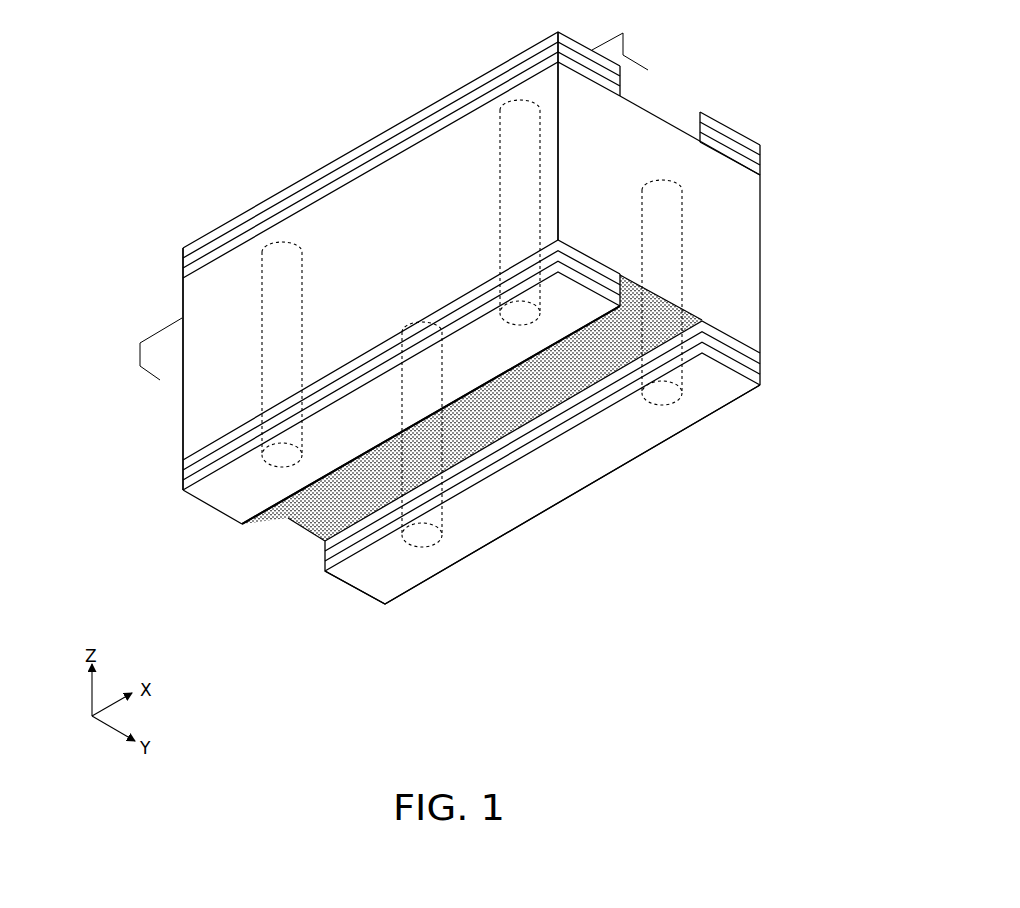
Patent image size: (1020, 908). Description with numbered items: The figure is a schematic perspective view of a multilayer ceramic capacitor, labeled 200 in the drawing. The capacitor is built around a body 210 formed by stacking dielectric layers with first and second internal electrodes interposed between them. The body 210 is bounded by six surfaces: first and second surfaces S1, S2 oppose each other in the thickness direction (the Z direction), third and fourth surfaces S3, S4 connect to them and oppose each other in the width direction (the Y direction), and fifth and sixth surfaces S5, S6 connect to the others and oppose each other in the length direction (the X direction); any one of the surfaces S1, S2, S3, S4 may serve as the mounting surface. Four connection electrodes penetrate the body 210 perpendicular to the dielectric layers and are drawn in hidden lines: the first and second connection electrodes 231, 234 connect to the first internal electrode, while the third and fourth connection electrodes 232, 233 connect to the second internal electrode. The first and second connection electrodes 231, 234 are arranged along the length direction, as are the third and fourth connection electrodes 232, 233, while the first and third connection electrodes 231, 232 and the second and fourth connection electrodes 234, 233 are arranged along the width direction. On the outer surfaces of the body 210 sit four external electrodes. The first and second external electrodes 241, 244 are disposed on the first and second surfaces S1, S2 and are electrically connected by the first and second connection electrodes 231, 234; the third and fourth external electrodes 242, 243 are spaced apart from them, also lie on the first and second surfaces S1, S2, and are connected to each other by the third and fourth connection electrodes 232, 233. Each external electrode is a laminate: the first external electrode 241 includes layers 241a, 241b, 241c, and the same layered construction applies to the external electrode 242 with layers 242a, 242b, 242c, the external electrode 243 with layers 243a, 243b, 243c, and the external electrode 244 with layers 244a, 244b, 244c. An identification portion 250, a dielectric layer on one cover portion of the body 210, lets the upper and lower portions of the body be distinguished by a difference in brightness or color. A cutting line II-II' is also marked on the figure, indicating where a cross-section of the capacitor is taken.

The housing 200 is at (273, 77).
The body 210 is at (312, 544).
The first connection electrode 231 is at (245, 514).
The third connection electrode 232 is at (424, 541).
The fourth connection electrode 233 is at (666, 403).
The second connection electrode 234 is at (568, 408).
The first external electrode 241 is at (328, 394).
The first layer of first external electrode 241a is at (182, 463).
The second layer of first external electrode 241b is at (182, 473).
The third layer of first external electrode 241c is at (182, 484).
The third external electrode 242 is at (616, 446).
The first layer of external electrode 242 242a is at (763, 357).
The second layer of external electrode 242 242b is at (764, 369).
The third layer of external electrode 242 242c is at (763, 381).
The fourth external electrode 243 is at (803, 163).
The first layer of external electrode 243 243a is at (766, 171).
The second layer of external electrode 243 243b is at (765, 159).
The third layer of external electrode 243 243c is at (765, 148).
The second external electrode 244 is at (328, 173).
The first layer of external electrode 244 244a is at (182, 273).
The second layer of external electrode 244 244b is at (182, 262).
The third layer of external electrode 244 244c is at (182, 252).
The identification portion 250 is at (183, 455).
The first surface S1 is at (318, 222).
The second surface S2 is at (378, 492).
The third surface S3 is at (250, 260).
The fourth surface S4 is at (515, 498).
The fifth surface S5 is at (290, 511).
The sixth surface S6 is at (642, 149).
The section line II is at (148, 349).
The section line II' is at (627, 44).